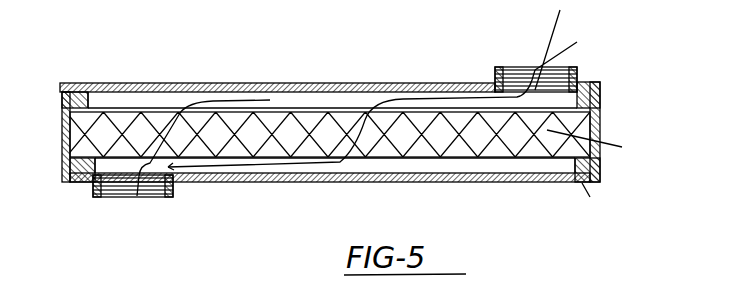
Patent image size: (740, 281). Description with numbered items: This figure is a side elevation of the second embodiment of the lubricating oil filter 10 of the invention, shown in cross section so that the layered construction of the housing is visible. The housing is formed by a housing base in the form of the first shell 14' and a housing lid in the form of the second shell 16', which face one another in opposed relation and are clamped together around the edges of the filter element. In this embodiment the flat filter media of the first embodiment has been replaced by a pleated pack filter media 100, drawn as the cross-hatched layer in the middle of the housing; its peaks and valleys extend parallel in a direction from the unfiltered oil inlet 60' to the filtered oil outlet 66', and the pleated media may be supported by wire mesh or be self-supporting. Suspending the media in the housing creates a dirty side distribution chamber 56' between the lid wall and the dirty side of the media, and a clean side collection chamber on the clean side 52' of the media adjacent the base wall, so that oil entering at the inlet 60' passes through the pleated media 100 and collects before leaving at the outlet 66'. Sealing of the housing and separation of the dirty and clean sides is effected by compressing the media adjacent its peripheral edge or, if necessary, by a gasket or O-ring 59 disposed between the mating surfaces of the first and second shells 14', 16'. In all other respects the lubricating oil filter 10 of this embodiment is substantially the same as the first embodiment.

The gasket or O-ring 59 is at (63, 93).
The second shell 16' is at (277, 71).
The first shell 14' is at (330, 196).
The pleated pack filter media 100 is at (277, 120).
The dirty side distribution chamber 56' is at (247, 118).
The clean side of the filter media 52' is at (351, 143).
The lubricating oil filter 10 is at (419, 72).
The unfiltered oil inlet 60' is at (519, 51).
The filtered oil outlet 66' is at (125, 218).